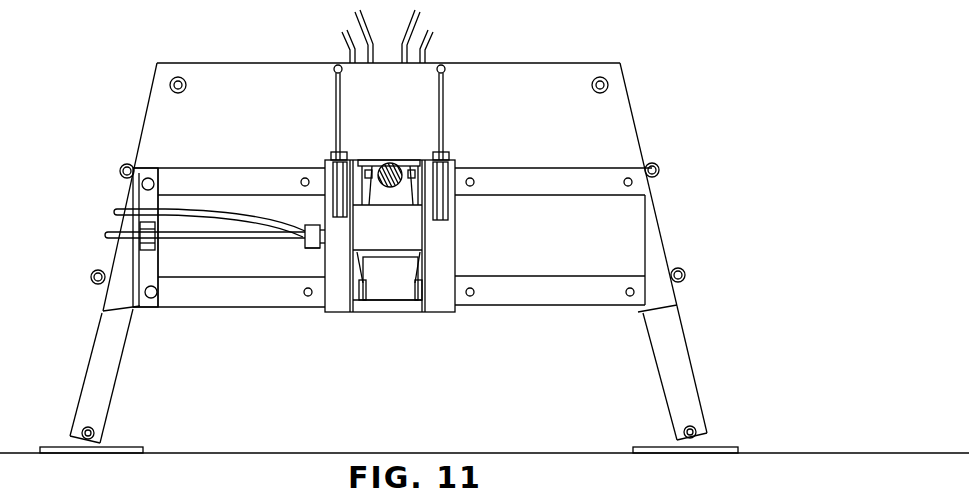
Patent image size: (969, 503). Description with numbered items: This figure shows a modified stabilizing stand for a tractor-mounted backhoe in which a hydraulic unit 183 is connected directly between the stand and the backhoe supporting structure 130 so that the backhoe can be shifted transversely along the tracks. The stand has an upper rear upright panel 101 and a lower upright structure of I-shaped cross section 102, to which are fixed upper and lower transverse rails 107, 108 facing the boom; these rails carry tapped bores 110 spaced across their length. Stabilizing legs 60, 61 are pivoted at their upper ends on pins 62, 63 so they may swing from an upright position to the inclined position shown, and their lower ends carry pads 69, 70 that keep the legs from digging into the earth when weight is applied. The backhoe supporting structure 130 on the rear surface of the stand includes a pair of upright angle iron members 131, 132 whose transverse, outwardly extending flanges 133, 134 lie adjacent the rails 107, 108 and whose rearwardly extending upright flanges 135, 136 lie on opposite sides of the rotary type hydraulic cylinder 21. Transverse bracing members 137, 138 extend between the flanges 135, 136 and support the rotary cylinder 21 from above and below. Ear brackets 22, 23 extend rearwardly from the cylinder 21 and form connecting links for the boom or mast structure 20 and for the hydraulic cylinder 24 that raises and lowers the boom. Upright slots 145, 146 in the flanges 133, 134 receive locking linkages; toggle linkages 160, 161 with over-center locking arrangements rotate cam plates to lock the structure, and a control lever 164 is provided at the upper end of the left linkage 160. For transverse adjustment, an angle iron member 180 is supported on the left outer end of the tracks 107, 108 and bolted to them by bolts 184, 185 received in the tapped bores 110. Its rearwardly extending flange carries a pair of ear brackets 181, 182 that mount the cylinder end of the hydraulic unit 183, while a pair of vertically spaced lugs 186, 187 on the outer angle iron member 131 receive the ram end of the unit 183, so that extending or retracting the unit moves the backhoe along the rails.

The upper rear upright panel 101 is at (628, 112).
The pivot pin 62 is at (170, 85).
The pivot pin 63 is at (608, 84).
The control lever 164 is at (334, 92).
The toggle linkage 161 is at (437, 101).
The toggle linkage 160 is at (342, 99).
The upper transverse rail 107 is at (221, 180).
The lower transverse rail 108 is at (220, 300).
The I-shaped upright structure 102 is at (633, 242).
The tapped bore 110 is at (304, 178).
The angle iron member 180 is at (142, 259).
The bolt 184 is at (150, 179).
The bolt 185 is at (153, 298).
The ear bracket 181 is at (158, 216).
The hydraulic unit 183 is at (260, 239).
The ear bracket 182 is at (155, 248).
The lug 186 is at (305, 224).
The lug 187 is at (308, 249).
The backhoe supporting structure 130 is at (440, 324).
The transverse flange 133 is at (338, 312).
The transverse flange 134 is at (446, 304).
The upright angle iron member 131 is at (354, 318).
The upright angle iron member 132 is at (458, 260).
The upright slot 145 is at (348, 228).
The upright slot 146 is at (447, 213).
The hydraulic cylinder 24 is at (390, 163).
The ear bracket 23 is at (372, 162).
The bracing member 137 is at (413, 162).
The upright flange 136 is at (421, 215).
The rotary type hydraulic cylinder 21 is at (425, 238).
The ear bracket 22 is at (400, 293).
The bracing member 138 is at (386, 307).
The boom or mast structure 20 is at (419, 286).
The upright flange 135 is at (356, 246).
The stabilizing leg 60 is at (103, 300).
The stabilizing leg 61 is at (680, 299).
The pad 69 is at (120, 453).
The pad 70 is at (718, 453).